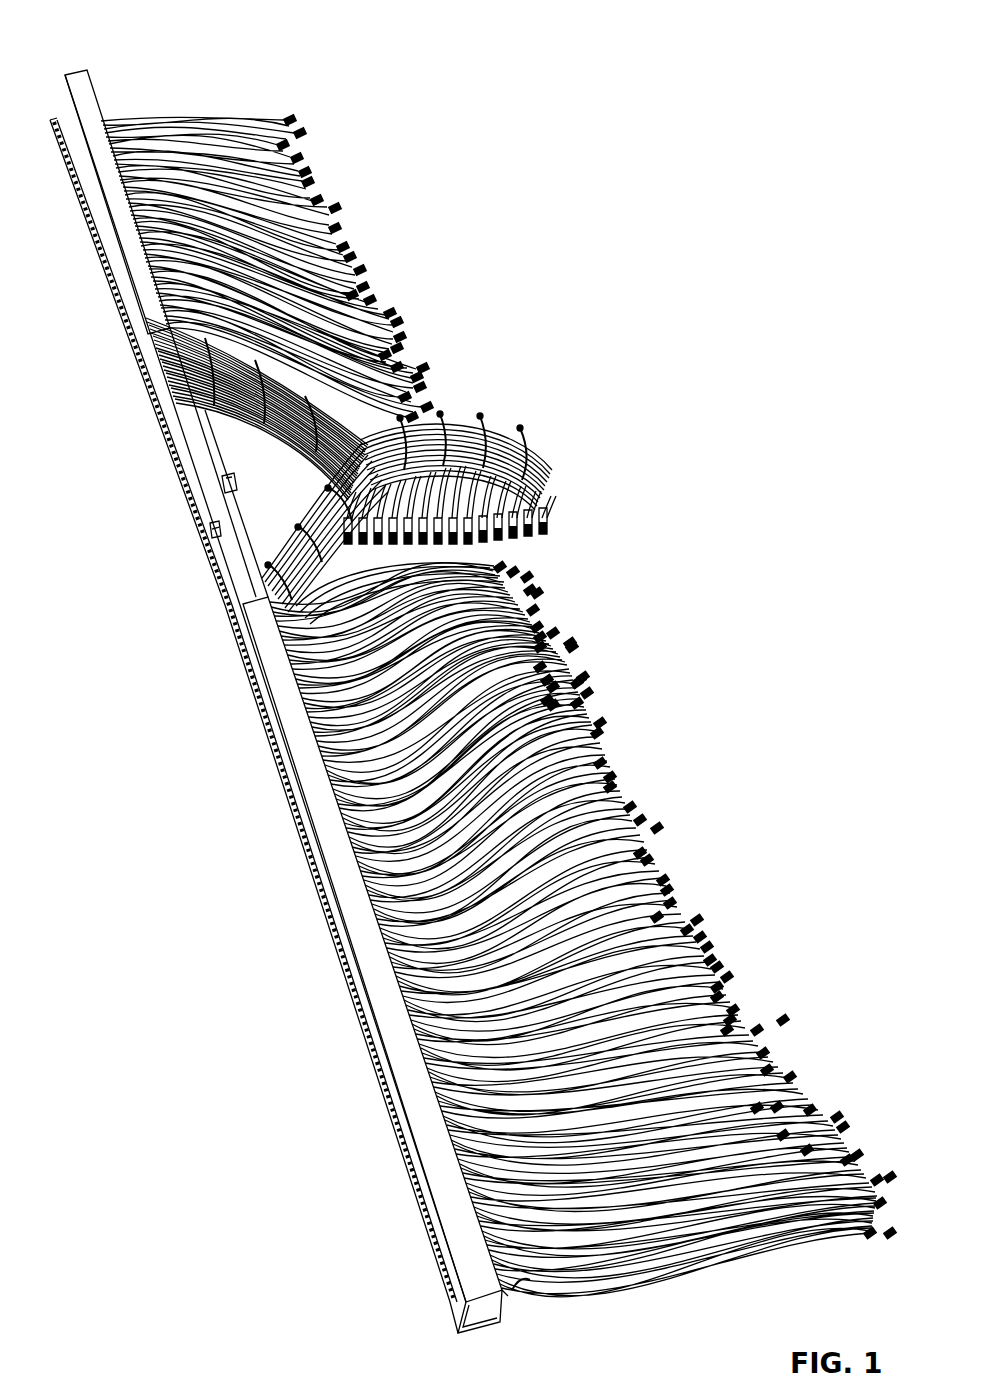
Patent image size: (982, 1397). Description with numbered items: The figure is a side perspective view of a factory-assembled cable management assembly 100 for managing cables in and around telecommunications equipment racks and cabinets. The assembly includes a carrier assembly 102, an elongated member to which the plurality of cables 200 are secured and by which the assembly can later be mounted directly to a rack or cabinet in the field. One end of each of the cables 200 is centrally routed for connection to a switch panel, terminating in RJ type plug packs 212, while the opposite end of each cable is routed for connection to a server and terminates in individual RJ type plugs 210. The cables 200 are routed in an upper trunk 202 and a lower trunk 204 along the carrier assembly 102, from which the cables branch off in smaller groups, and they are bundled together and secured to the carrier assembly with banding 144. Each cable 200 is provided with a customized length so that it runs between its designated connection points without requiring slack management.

The cable management assembly 100 is at (117, 34).
The carrier assembly 102 is at (342, 862).
The banding 144 is at (220, 424).
The cables 200 is at (663, 1268).
The upper trunk 202 is at (180, 390).
The lower trunk 204 is at (275, 560).
The RJ type plugs 210 is at (793, 1103).
The RJ type plug packs 212 is at (512, 540).